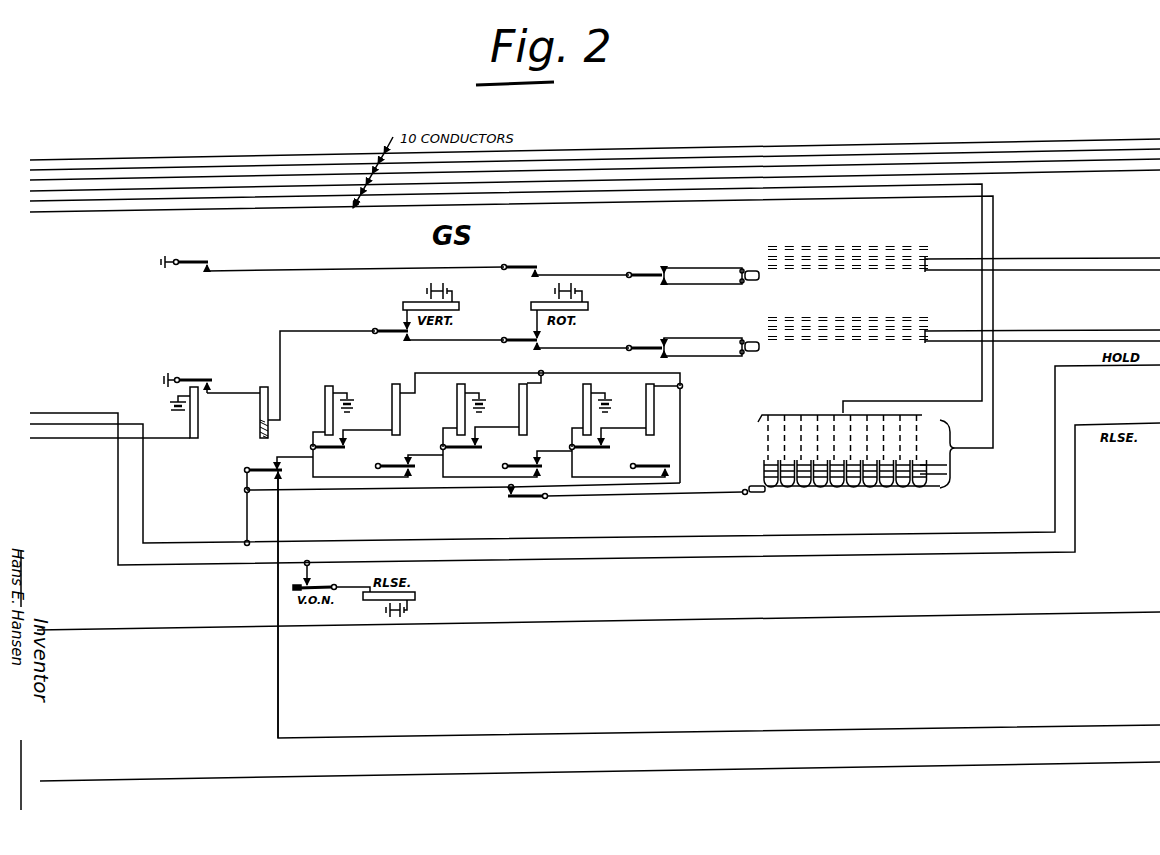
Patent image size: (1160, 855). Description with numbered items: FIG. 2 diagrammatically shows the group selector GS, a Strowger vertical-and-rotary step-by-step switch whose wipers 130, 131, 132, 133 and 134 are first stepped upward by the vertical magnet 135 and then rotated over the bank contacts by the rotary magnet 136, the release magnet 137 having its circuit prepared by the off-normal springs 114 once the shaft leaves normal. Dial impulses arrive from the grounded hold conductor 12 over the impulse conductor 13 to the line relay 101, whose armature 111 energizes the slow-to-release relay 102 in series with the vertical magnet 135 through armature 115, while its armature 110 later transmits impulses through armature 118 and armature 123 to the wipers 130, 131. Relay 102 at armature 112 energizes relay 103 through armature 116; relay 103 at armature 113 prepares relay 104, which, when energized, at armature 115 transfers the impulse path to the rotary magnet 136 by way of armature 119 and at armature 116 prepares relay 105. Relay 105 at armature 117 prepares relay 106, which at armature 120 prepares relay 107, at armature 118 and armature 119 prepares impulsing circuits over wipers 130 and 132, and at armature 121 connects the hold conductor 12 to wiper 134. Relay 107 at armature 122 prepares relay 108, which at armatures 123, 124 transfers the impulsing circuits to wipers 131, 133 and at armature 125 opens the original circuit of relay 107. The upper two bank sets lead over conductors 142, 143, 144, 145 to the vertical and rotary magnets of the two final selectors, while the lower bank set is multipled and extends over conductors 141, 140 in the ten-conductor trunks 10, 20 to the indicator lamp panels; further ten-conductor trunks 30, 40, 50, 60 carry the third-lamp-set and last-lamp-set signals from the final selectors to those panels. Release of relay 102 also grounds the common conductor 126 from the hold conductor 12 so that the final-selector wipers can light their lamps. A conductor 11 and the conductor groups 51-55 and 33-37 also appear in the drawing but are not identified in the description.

The ten-conductor trunk 10 is at (52, 208).
The ten-conductor trunk 20 is at (87, 200).
The ten-conductor trunk 30 is at (136, 189).
The ten-conductor trunk 40 is at (42, 180).
The ten-conductor trunk 50 is at (88, 169).
The ten-conductor trunk 60 is at (128, 142).
The release line conductor 11 is at (42, 413).
The hold conductor 12 is at (72, 424).
The impulse conductor 13 is at (44, 440).
The line relay 101 is at (192, 438).
The slow-to-release relay 102 is at (260, 420).
The relay 103 is at (325, 414).
The relay 104 is at (392, 414).
The relay 105 is at (457, 414).
The relay 106 is at (519, 414).
The relay 107 is at (583, 414).
The relay 108 is at (646, 414).
The armature 110 is at (196, 262).
The armature 111 is at (196, 380).
The armature 112 is at (272, 468).
The armature 113 is at (347, 447).
The off-normal springs 114 is at (312, 588).
The armature 115 is at (388, 331).
The armature 116 is at (406, 464).
The armature 117 is at (483, 447).
The armature 118 is at (536, 267).
The armature 119 is at (524, 338).
The armature 120 is at (536, 464).
The armature 121 is at (506, 500).
The armature 122 is at (606, 446).
The armature 123 is at (656, 275).
The armature 124 is at (653, 347).
The armature 125 is at (640, 465).
The common conductor 126 is at (1040, 727).
The wiper 130 is at (752, 258).
The wiper 131 is at (750, 285).
The wiper 132 is at (748, 328).
The wiper 133 is at (747, 357).
The wiper 134 is at (757, 486).
The vertical magnet 135 is at (418, 302).
The rotary magnet 136 is at (546, 302).
The release magnet 137 is at (415, 594).
The conductor 140 is at (922, 415).
The conductor 141 is at (942, 490).
The conductor 142 is at (1008, 259).
The conductor 143 is at (1012, 271).
The conductor 144 is at (1010, 331).
The conductor 145 is at (1012, 342).
The conductors 51-55 is at (1093, 614).
The conductors 33-37 is at (1090, 764).